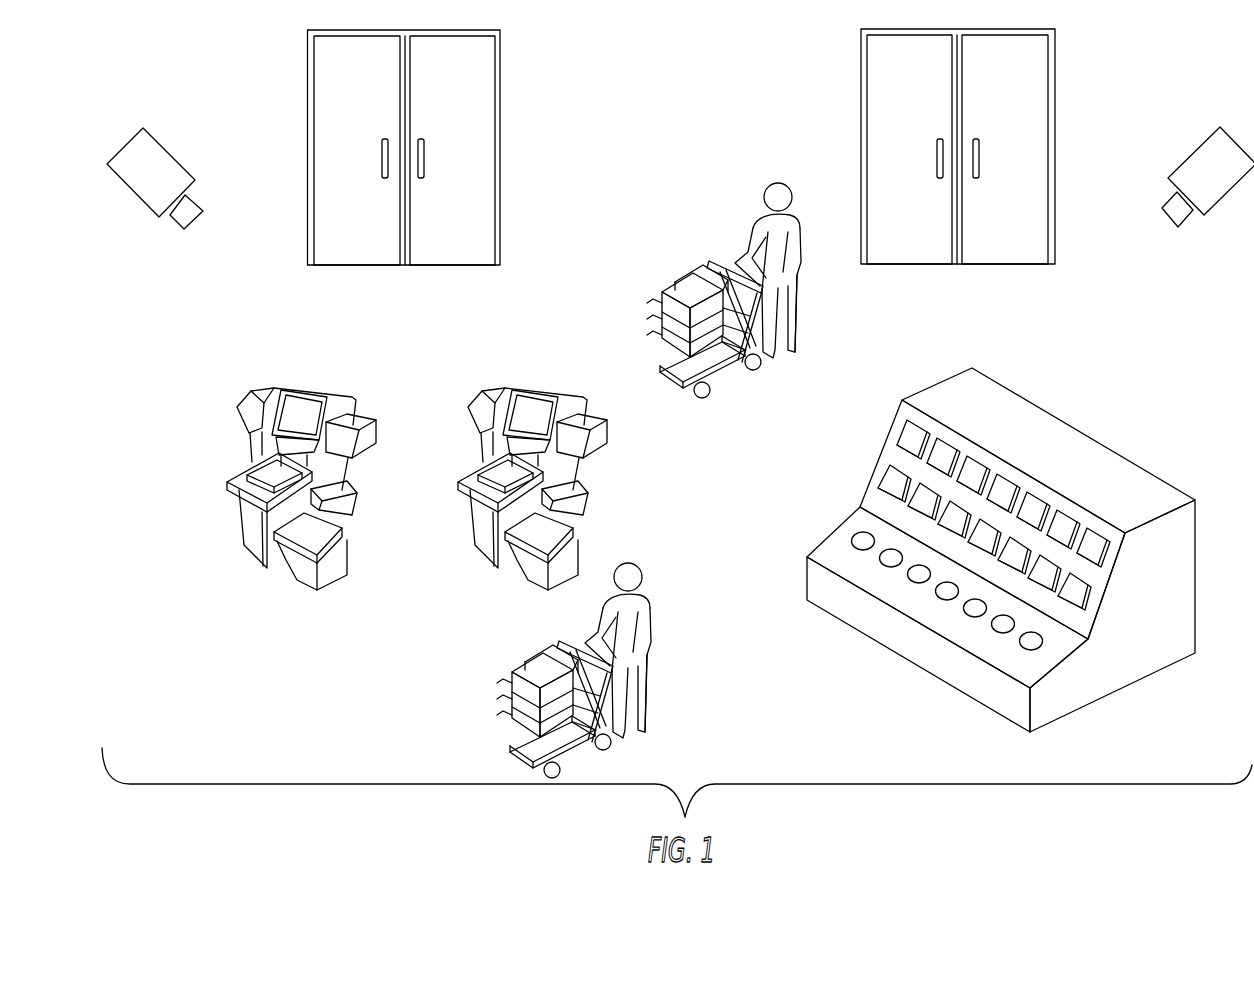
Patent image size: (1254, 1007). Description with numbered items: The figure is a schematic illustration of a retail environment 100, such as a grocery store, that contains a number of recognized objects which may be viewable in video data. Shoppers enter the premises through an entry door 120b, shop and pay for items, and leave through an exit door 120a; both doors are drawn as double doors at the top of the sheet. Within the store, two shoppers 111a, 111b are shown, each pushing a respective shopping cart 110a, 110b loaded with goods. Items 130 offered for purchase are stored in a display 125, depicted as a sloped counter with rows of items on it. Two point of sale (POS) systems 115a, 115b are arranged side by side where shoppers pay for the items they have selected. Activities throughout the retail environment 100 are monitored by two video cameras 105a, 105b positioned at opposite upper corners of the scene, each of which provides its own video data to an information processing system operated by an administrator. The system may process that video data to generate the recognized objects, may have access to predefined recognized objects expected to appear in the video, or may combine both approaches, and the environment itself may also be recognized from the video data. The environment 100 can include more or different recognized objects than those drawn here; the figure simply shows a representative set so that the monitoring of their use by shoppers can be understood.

The retail environment 100 is at (1150, 64).
The video camera 105a is at (167, 163).
The video camera 105b is at (1215, 184).
The shopping cart 110a is at (718, 377).
The shopping cart 110b is at (572, 753).
The shopper 111a is at (820, 226).
The shopper 111b is at (660, 622).
The point of sale (POS) system 115a is at (540, 385).
The point of sale (POS) system 115b is at (318, 388).
The exit door 120a is at (452, 266).
The entry door 120b is at (993, 265).
The display 125 is at (1008, 702).
The items 130 is at (918, 583).